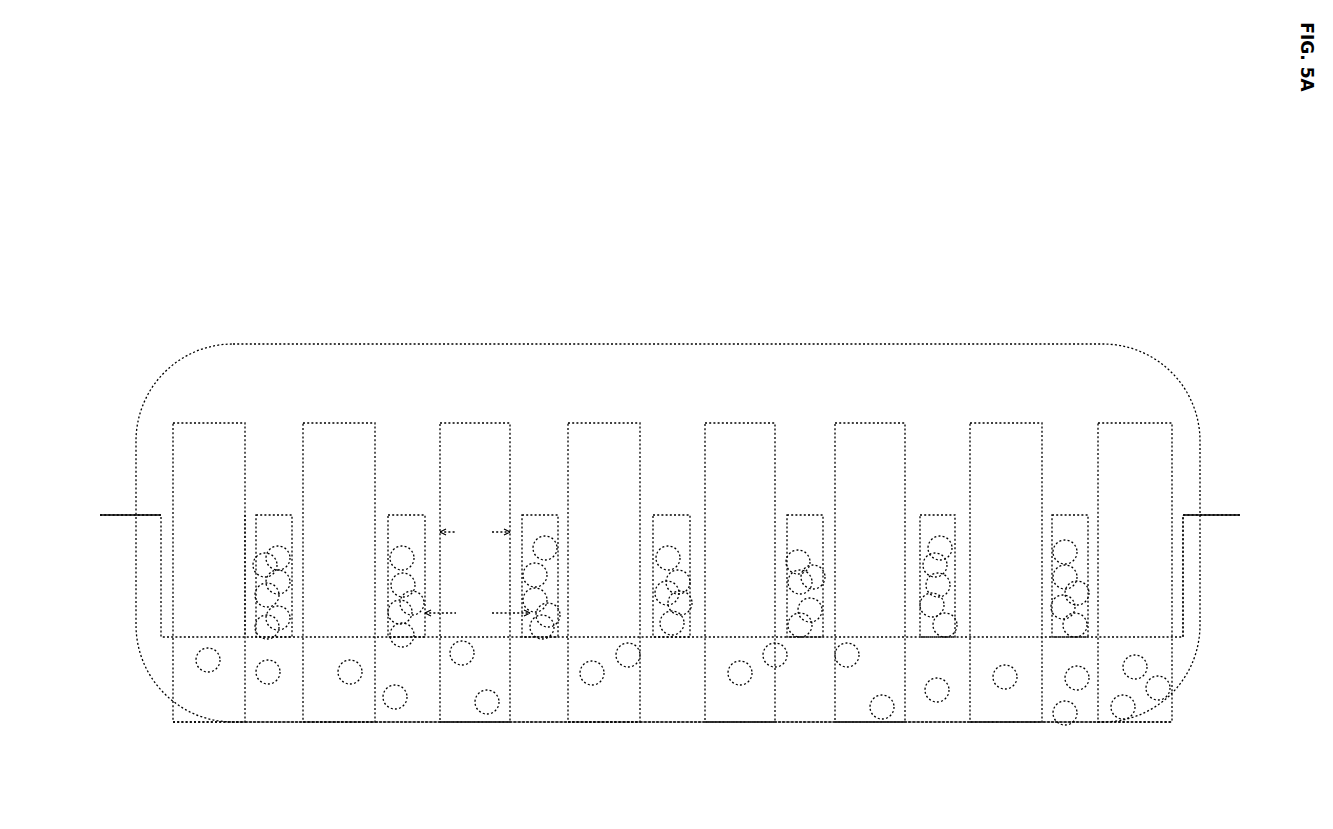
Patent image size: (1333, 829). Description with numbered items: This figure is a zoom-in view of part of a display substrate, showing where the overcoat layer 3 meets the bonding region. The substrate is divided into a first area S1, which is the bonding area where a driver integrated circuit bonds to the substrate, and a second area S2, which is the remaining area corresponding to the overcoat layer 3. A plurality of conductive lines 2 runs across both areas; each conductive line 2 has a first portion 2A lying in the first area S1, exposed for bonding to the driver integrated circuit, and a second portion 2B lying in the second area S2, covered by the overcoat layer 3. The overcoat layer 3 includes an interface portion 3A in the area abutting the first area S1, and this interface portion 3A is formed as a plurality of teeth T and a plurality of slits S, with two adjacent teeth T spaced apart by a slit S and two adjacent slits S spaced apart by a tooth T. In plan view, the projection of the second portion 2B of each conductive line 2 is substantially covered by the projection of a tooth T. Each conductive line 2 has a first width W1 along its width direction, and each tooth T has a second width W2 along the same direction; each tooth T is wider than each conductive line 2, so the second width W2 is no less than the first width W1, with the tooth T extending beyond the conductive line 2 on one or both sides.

The conductive line 2 is at (646, 556).
The first portion 2A is at (131, 408).
The second portion 2B is at (131, 408).
The overcoat layer 3 is at (670, 508).
The interface portion 3A is at (940, 410).
The slit S is at (274, 533).
The tooth T is at (253, 550).
The first width W1 is at (475, 532).
The second width W2 is at (477, 613).
The first area S1 is at (1203, 576).
The second area S2 is at (670, 500).